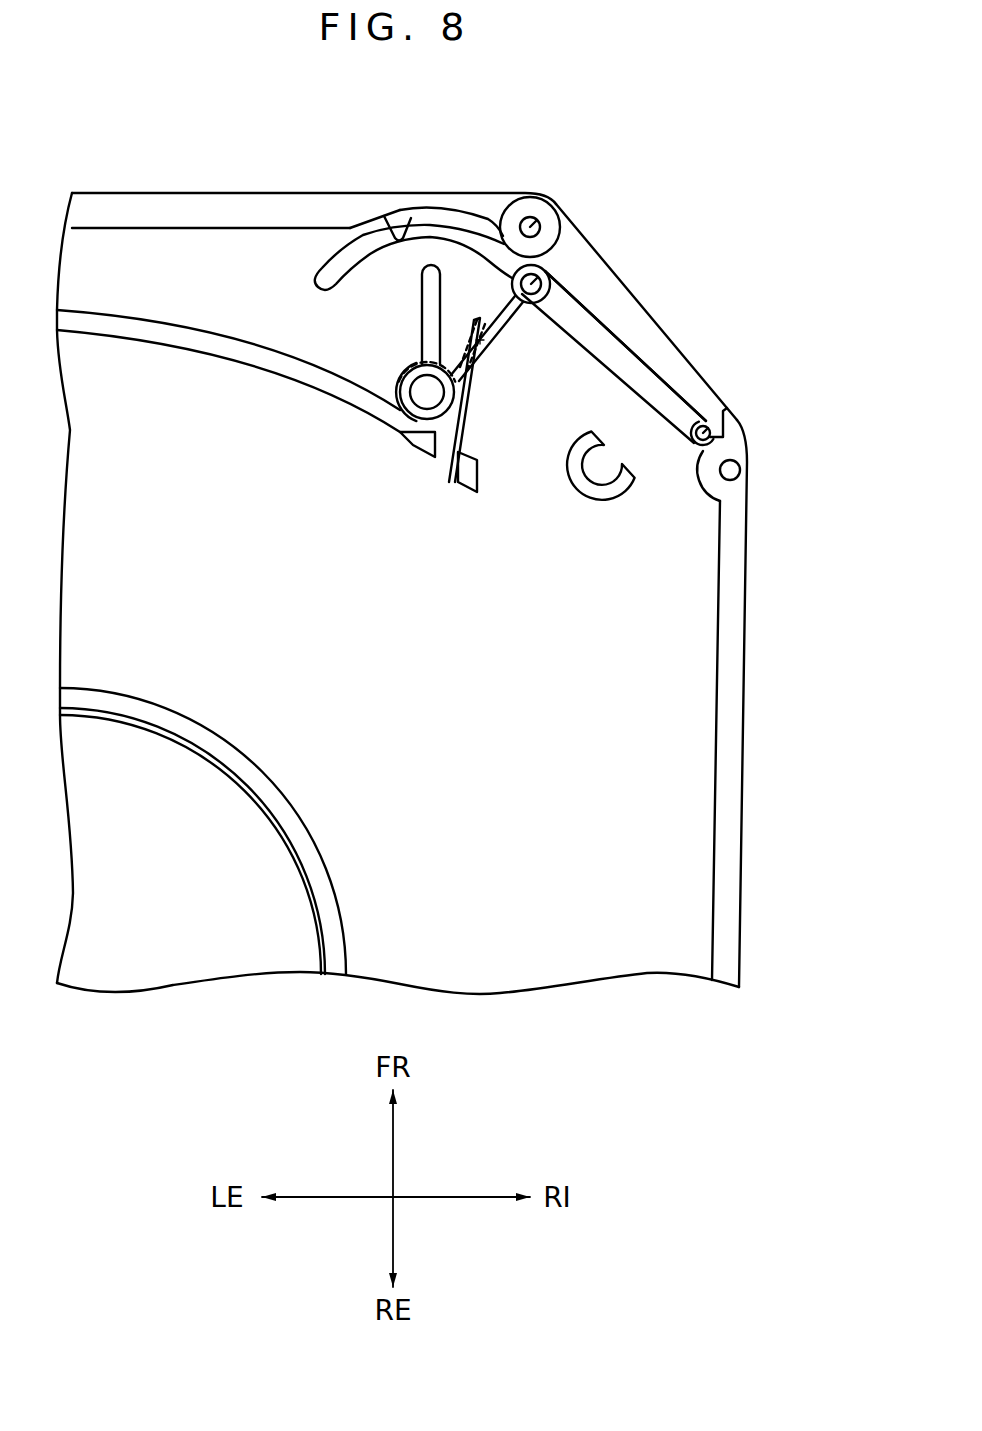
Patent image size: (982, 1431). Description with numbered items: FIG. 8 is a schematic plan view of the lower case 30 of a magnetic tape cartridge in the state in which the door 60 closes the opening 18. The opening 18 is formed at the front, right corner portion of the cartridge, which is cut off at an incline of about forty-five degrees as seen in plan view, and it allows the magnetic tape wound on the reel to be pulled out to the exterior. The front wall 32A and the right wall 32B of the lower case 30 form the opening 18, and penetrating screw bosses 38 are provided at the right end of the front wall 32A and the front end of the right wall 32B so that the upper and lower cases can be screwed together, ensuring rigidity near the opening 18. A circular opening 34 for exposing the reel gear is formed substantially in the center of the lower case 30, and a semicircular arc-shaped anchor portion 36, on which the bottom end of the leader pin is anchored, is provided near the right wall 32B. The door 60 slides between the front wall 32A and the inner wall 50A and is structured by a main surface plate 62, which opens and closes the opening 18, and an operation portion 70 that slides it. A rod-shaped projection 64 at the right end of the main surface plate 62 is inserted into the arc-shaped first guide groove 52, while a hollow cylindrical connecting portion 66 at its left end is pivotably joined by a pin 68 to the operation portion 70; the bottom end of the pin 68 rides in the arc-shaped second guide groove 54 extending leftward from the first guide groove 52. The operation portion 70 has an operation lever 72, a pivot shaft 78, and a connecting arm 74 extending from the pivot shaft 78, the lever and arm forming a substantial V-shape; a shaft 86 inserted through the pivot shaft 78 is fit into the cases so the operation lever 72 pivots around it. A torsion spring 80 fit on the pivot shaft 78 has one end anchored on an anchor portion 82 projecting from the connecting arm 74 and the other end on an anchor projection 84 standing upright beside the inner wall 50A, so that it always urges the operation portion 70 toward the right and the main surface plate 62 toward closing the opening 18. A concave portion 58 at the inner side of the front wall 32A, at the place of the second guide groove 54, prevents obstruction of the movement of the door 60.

The opening 18 is at (700, 368).
The lower case 30 is at (750, 705).
The front wall 32A is at (178, 203).
The right wall 32B is at (745, 650).
The circular opening 34 is at (267, 813).
The anchor portion 36 is at (610, 463).
The screw boss 38 is at (533, 225).
The inner wall 50A is at (150, 312).
The first guide groove 52 is at (620, 333).
The second guide groove 54 is at (449, 238).
The concave portion 58 is at (410, 232).
The door 60 is at (688, 398).
The main surface plate 62 is at (643, 377).
The projection 64 is at (698, 450).
The connecting portion 66 is at (501, 232).
The pin 68 is at (557, 268).
The operation portion 70 is at (417, 347).
The operation lever 72 is at (421, 303).
The connecting arm 74 is at (501, 318).
The pivot shaft 78 is at (397, 453).
The torsion spring 80 is at (440, 474).
The anchor portion 82 is at (481, 364).
The anchor projection 84 is at (468, 475).
The shaft 86 is at (425, 393).